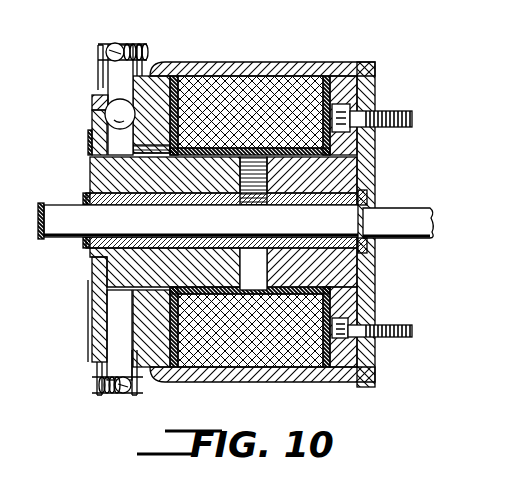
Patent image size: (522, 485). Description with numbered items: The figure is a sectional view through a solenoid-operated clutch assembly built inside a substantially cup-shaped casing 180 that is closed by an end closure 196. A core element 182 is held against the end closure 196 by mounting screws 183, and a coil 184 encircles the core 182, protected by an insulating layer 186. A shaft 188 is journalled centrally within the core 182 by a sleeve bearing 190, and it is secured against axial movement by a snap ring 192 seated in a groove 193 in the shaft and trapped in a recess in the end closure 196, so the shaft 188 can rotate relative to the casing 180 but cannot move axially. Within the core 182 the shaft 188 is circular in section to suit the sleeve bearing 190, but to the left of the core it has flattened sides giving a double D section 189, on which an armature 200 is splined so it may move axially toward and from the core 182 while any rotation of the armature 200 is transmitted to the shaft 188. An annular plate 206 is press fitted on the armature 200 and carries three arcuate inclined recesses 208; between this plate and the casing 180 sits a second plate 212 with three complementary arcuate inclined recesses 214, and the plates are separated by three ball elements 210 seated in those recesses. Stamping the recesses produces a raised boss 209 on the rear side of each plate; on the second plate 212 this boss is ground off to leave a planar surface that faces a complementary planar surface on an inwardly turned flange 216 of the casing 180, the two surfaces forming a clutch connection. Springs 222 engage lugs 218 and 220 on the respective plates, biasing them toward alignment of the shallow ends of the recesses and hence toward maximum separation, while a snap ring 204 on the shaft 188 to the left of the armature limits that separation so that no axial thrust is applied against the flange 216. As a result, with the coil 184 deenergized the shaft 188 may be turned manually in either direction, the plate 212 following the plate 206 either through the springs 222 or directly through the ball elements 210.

The casing 180 is at (222, 63).
The core element 182 is at (358, 142).
The mounting screws 183 is at (412, 114).
The coil 184 is at (292, 82).
The insulating layer 186 is at (340, 80).
The shaft 188 is at (62, 234).
The double D section 189 is at (38, 212).
The sleeve bearing 190 is at (310, 207).
The snap ring 192 is at (370, 198).
The groove 193 is at (365, 238).
The end closure 196 is at (376, 94).
The armature 200 is at (92, 176).
The snap ring 204 is at (88, 199).
The annular plate 206 is at (93, 142).
The arcuate inclined recesses 208 is at (105, 112).
The raised boss 209 is at (90, 124).
The ball elements 210 is at (96, 100).
The second plate 212 is at (150, 76).
The arcuate inclined recesses 214 is at (120, 212).
The inwardly turned flange 216 is at (148, 374).
The lug 218 is at (98, 56).
The lug 220 is at (143, 55).
The springs 222 is at (116, 42).